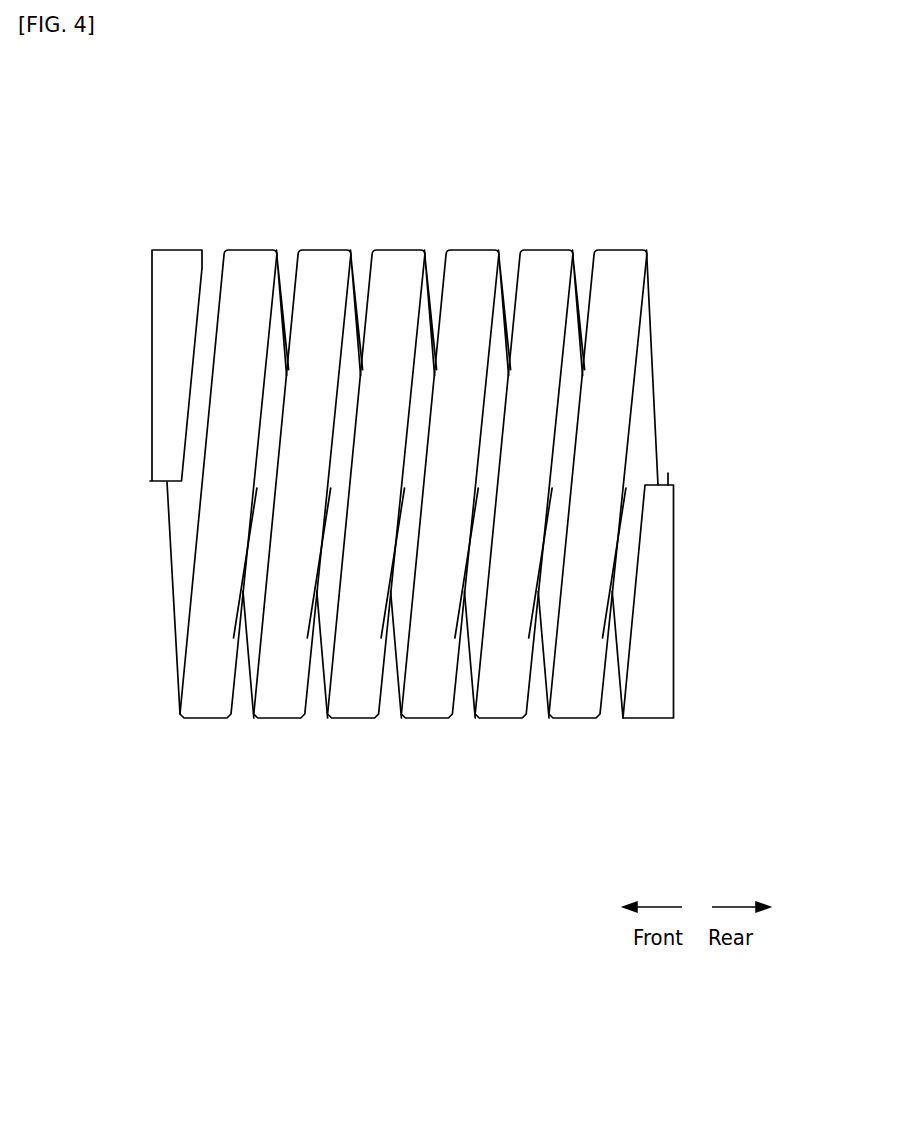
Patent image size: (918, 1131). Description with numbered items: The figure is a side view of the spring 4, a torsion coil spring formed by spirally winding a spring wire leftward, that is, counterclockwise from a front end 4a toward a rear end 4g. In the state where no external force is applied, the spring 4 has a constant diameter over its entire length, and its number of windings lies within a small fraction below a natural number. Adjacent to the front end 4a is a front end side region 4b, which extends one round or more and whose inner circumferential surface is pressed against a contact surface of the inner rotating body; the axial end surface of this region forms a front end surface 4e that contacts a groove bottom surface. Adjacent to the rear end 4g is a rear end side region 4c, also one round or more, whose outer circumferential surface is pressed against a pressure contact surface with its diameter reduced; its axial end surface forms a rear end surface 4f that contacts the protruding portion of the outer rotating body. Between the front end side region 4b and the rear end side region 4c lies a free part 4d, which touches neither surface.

The spring 4 is at (412, 428).
The front end 4a is at (158, 490).
The front end side region 4b is at (245, 255).
The rear end side region 4c is at (543, 255).
The free part 4d is at (505, 240).
The front end surface 4e is at (152, 368).
The rear end surface 4f is at (674, 600).
The rear end 4g is at (670, 470).